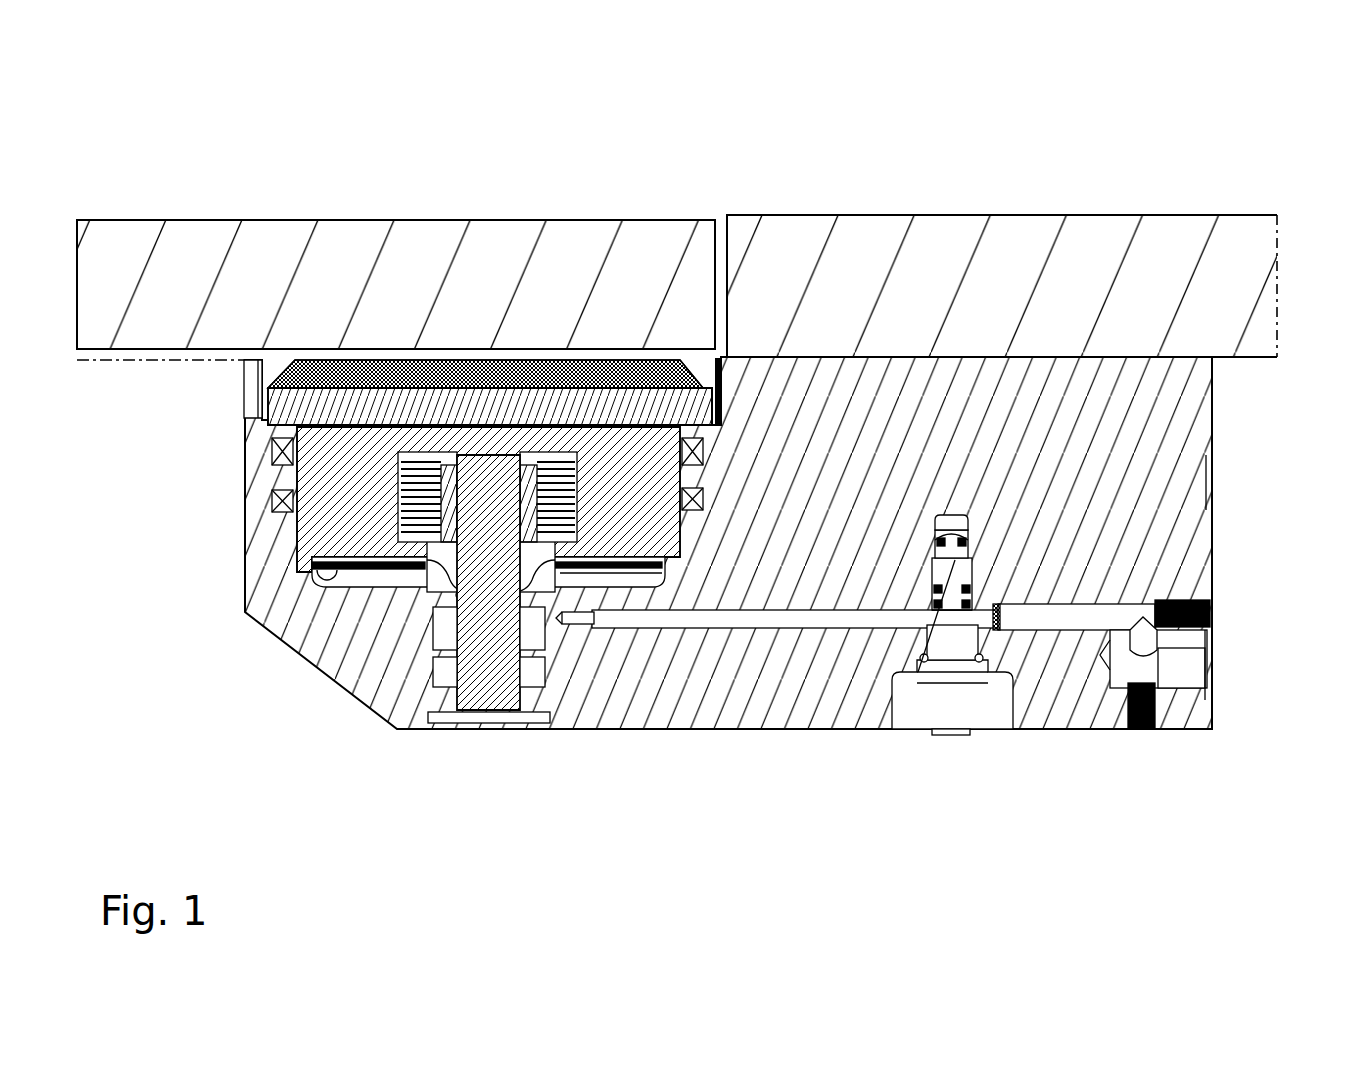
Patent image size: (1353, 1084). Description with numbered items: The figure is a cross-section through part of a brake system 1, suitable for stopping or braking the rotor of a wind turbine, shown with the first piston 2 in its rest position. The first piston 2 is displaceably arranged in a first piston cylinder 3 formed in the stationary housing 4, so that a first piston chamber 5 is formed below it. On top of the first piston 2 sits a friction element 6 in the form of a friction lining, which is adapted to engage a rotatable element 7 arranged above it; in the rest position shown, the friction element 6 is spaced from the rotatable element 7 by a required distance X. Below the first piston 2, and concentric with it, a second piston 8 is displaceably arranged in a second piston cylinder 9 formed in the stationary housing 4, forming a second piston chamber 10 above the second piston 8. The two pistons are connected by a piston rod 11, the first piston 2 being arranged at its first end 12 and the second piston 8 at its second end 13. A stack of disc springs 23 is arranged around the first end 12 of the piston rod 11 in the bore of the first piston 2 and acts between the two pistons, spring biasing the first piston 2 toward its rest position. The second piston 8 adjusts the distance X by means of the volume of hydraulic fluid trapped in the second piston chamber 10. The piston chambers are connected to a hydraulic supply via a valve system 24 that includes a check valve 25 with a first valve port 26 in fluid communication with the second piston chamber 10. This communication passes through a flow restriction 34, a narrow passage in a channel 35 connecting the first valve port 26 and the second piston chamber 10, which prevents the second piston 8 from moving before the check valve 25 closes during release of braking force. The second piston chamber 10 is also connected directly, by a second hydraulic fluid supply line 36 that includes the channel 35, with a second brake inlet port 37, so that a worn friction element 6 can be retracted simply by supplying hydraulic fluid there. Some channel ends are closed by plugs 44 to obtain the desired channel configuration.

The brake system 1 is at (1152, 170).
The first piston 2 is at (343, 515).
The first piston cylinder 3 is at (335, 548).
The stationary housing 4 is at (1140, 445).
The first piston chamber 5 is at (627, 577).
The friction element 6 is at (665, 375).
The rotatable element 7 is at (405, 236).
The second piston 8 is at (443, 667).
The second piston cylinder 9 is at (530, 655).
The second piston chamber 10 is at (440, 630).
The piston rod 11 is at (480, 568).
The first end of the piston rod 12 is at (495, 470).
The second end of the piston rod 13 is at (487, 668).
The stack of disc springs 23 is at (406, 470).
The valve system 24 is at (992, 770).
The check valve 25 is at (950, 655).
The first valve port 26 is at (970, 608).
The flow restriction 34 is at (575, 622).
The channel 35 is at (702, 620).
The second hydraulic fluid supply line 36 is at (820, 617).
The second brake inlet port 37 is at (1195, 665).
The plugs 44 is at (1215, 613).
The distance X is at (145, 288).